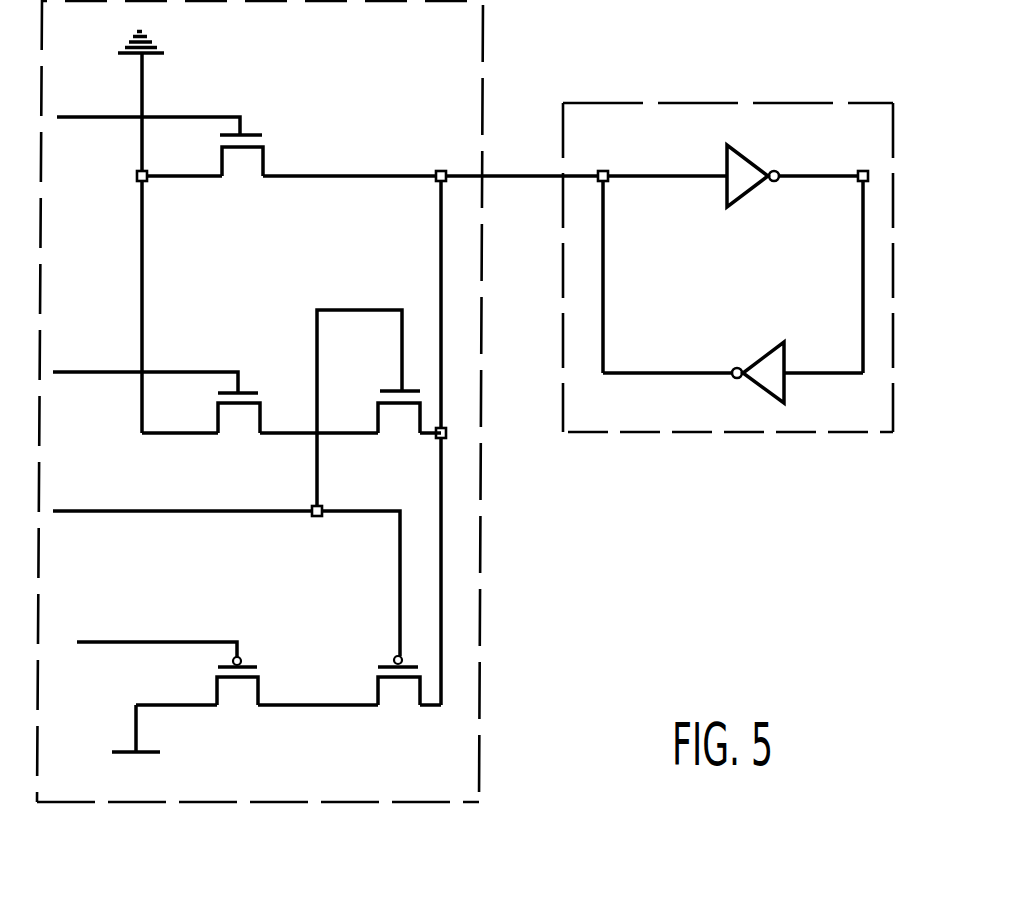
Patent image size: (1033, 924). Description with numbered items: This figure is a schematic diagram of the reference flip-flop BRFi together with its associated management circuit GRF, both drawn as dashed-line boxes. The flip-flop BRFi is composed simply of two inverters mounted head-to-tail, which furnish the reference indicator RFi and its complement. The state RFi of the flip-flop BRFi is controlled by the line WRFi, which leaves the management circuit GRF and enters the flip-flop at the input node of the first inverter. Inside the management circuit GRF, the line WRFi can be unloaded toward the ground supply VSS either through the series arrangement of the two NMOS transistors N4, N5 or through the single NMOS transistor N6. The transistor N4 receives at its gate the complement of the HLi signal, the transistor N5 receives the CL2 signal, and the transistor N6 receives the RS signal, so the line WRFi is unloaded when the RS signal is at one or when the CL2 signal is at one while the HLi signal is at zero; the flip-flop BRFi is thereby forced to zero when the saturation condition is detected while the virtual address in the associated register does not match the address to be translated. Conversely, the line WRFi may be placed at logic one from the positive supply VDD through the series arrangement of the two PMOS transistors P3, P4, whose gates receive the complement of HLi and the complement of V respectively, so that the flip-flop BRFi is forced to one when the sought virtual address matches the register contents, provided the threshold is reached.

The management circuit GRF is at (521, 779).
The reference flip-flop BRFi is at (820, 433).
The ground supply VSS is at (158, 62).
The positive supply VDD is at (136, 746).
The RS signal RS is at (109, 116).
The CL2 signal CL2 is at (115, 373).
The line WRFi is at (461, 128).
The reference indicator RFi is at (612, 172).
The NMOS transistor N6 is at (238, 182).
The NMOS transistor N5 is at (235, 433).
The NMOS transistor N4 is at (397, 435).
The PMOS transistor P4 is at (230, 708).
The PMOS transistor P3 is at (398, 703).